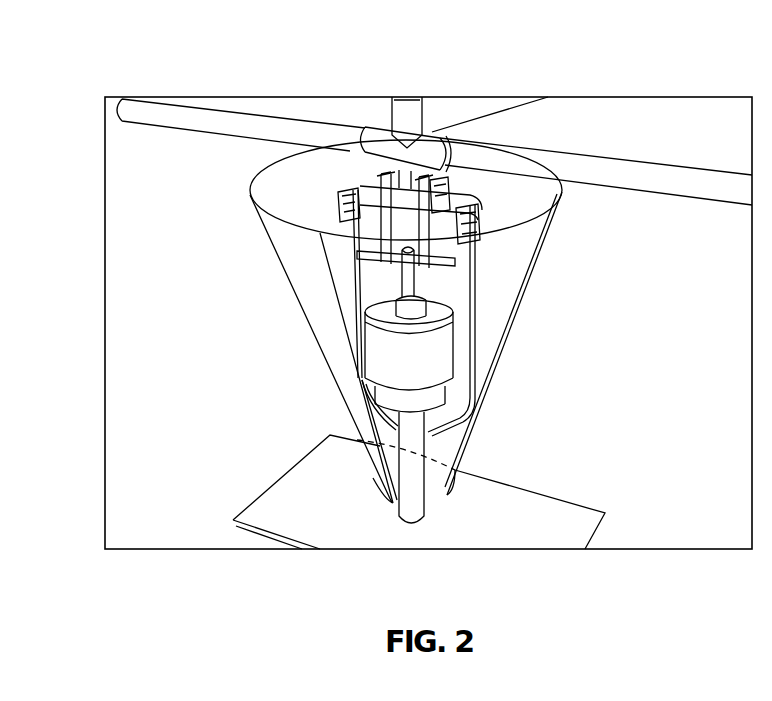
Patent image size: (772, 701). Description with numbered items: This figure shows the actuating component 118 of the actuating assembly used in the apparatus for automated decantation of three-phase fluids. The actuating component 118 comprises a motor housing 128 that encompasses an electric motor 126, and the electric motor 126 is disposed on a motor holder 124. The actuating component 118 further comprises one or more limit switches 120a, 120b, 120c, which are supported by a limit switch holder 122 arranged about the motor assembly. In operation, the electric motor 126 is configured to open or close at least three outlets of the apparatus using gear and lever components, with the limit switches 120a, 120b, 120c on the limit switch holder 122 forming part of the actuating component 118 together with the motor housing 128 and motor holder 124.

The actuating component 118 is at (213, 97).
The limit switch 120a is at (345, 188).
The limit switch 120b is at (482, 222).
The limit switch 120c is at (432, 178).
The limit switch holder 122 is at (478, 302).
The motor holder 124 is at (413, 516).
The electric motor 126 is at (440, 368).
The motor housing 128 is at (305, 283).